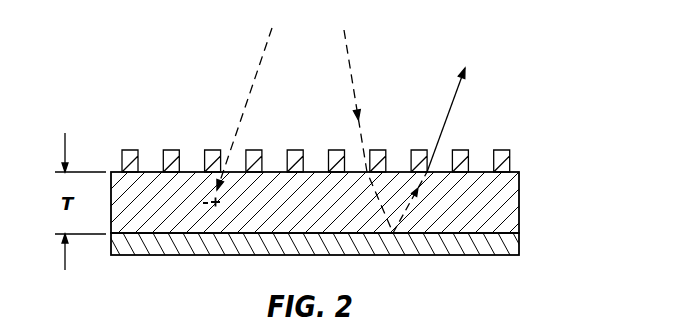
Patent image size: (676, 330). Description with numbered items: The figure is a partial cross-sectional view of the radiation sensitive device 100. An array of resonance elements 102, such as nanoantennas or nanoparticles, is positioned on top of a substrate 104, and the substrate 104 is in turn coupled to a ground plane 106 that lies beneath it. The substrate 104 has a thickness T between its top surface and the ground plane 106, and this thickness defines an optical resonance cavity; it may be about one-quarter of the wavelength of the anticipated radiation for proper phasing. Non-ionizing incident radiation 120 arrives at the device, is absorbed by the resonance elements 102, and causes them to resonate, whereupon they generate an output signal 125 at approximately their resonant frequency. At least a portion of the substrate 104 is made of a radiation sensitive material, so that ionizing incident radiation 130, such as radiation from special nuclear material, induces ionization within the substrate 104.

The radiation sensitive device 100 is at (145, 72).
The resonance elements 102 is at (510, 155).
The substrate 104 is at (508, 197).
The ground plane 106 is at (462, 245).
The non-ionizing incident radiation 120 is at (350, 67).
The output signal 125 is at (453, 103).
The ionizing incident radiation 130 is at (245, 105).